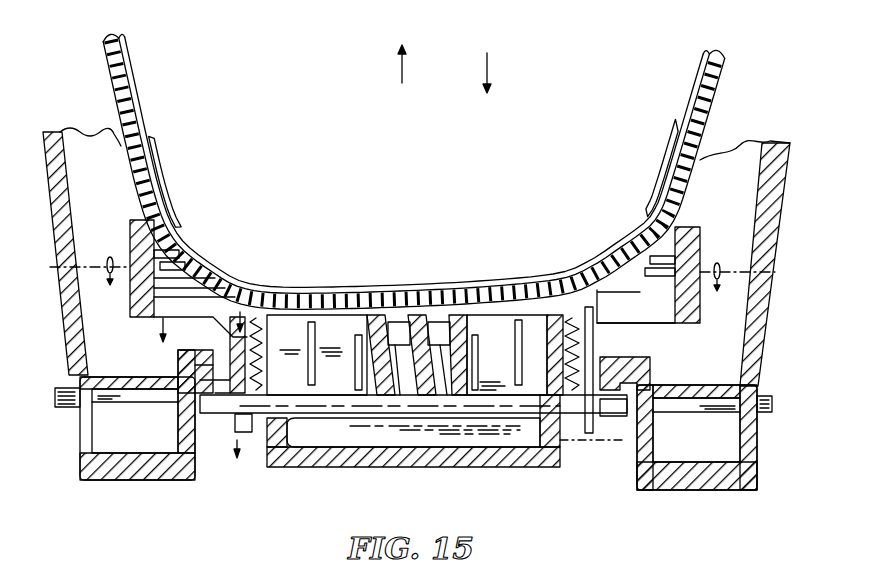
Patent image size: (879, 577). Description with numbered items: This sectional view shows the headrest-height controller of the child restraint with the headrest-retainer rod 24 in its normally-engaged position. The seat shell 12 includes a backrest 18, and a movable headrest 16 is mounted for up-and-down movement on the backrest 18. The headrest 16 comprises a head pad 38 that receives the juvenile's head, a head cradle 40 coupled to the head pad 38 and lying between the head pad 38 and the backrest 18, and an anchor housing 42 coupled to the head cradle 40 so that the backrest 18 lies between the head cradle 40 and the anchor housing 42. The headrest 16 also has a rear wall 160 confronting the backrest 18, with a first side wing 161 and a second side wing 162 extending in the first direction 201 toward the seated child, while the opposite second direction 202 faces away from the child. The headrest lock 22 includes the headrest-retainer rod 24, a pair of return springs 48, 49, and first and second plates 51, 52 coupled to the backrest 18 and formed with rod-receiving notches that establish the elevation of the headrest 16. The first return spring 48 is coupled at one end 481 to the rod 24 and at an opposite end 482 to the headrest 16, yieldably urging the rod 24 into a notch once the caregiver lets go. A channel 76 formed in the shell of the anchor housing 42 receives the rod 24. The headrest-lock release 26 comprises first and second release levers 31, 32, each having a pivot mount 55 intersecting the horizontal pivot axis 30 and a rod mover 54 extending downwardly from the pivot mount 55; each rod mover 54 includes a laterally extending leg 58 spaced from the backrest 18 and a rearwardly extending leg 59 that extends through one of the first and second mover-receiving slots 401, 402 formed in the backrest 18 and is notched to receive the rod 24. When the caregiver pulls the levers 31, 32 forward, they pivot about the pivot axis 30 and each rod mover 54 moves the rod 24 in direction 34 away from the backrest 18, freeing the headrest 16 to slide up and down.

The seat shell 12 is at (740, 138).
The movable headrest 16 is at (94, 63).
The backrest 18 is at (617, 346).
The headrest lock 22 is at (615, 452).
The headrest-retainer rod 24 is at (473, 403).
The headrest-lock release 26 is at (367, 139).
The pivot axis 30 is at (83, 253).
The first release lever 31 is at (120, 232).
The second release lever 32 is at (708, 240).
The direction 34 is at (238, 446).
The head pad 38 is at (136, 88).
The head cradle 40 is at (118, 100).
The anchor housing 42 is at (392, 470).
The first return spring 48 is at (242, 343).
The second return spring 49 is at (563, 340).
The first plate 51 is at (181, 334).
The second plate 52 is at (610, 388).
The rod mover 54 is at (698, 305).
The pivot mount 55 is at (133, 294).
The laterally extending leg 58 is at (207, 307).
The rearwardly extending leg 59 is at (232, 397).
The channel 76 is at (526, 439).
The rear wall 160 is at (393, 308).
The first side wing 161 is at (152, 150).
The second side wing 162 is at (680, 124).
The first direction 201 is at (400, 70).
The second direction 202 is at (490, 66).
The first mover-receiving slot 401 is at (253, 313).
The second mover-receiving slot 402 is at (590, 346).
The one end 481 is at (283, 425).
The opposite end 482 is at (282, 310).